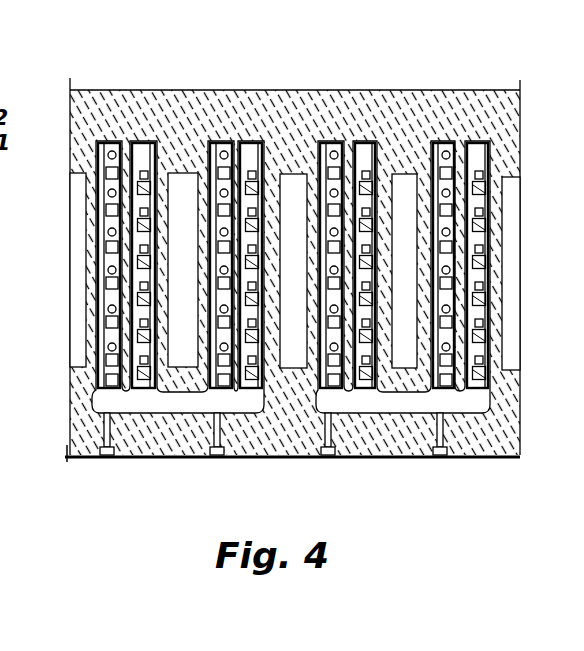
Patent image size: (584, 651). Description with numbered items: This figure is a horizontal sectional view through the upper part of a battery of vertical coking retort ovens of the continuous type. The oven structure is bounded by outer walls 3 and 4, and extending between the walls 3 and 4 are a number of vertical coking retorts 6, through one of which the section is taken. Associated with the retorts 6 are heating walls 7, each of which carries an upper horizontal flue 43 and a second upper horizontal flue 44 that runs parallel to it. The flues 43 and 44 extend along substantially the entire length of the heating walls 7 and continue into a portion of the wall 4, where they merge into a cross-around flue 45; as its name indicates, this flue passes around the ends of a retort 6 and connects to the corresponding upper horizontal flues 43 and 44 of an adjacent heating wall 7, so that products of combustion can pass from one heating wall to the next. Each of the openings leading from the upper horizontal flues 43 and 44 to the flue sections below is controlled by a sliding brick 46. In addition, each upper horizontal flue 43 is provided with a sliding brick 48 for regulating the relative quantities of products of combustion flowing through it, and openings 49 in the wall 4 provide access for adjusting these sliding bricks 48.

The outer wall 3 is at (97, 89).
The outer wall 4 is at (66, 443).
The vertical coking retort 6 is at (186, 182).
The heating wall 7 is at (88, 244).
The upper horizontal flue 43 is at (98, 300).
The second upper horizontal flue 44 is at (140, 143).
The cross-around flue 45 is at (160, 403).
The sliding brick 46 is at (105, 362).
The sliding brick 48 is at (108, 385).
The opening 49 is at (200, 455).